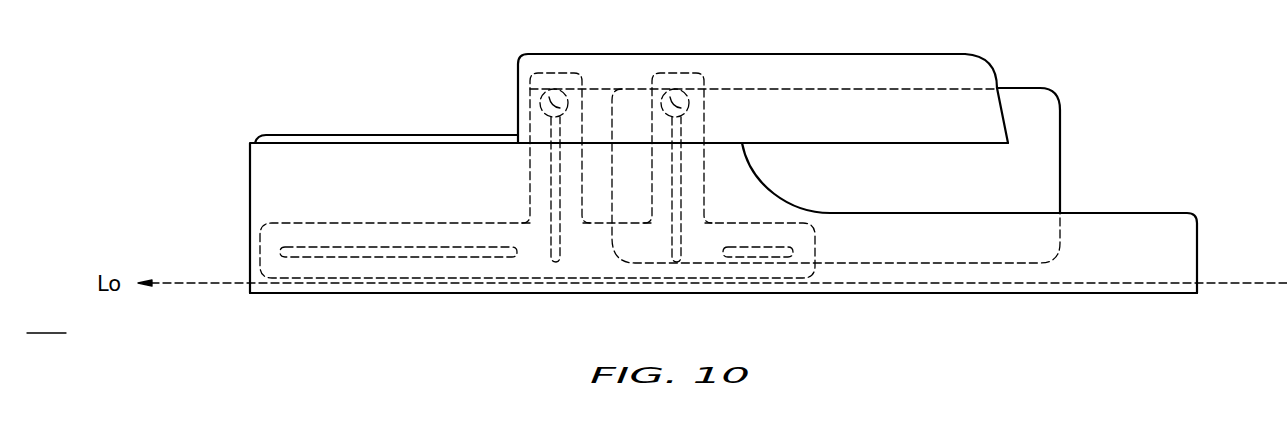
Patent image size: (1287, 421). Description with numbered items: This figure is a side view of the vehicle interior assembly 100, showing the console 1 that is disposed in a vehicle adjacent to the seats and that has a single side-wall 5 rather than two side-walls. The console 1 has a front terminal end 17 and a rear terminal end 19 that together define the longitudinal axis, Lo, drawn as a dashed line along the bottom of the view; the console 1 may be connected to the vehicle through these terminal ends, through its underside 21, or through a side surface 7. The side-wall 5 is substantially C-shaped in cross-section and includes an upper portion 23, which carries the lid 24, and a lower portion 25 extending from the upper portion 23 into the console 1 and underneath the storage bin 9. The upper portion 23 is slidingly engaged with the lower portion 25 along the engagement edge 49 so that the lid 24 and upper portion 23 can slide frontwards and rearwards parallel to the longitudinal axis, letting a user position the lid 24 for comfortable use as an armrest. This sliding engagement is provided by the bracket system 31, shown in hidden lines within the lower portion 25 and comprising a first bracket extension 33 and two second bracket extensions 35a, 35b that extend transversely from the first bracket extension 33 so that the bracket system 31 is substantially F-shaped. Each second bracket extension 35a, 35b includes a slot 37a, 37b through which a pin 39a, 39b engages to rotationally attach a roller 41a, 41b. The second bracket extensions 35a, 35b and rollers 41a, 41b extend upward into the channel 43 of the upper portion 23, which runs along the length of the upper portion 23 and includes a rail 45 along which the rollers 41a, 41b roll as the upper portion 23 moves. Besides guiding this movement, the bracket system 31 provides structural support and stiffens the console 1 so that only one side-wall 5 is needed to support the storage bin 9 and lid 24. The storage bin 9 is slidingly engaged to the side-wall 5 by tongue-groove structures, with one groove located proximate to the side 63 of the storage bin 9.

The vehicle interior assembly 100 is at (47, 322).
The console 1 is at (1197, 248).
The side-wall 5 is at (338, 175).
The side surface 7 is at (993, 272).
The storage bin 9 is at (1020, 130).
The front terminal end 17 is at (1173, 250).
The rear terminal end 19 is at (250, 227).
The underside 21 is at (347, 294).
The upper portion 23 is at (967, 73).
The lid 24 is at (816, 55).
The lower portion 25 is at (1100, 242).
The bracket system 31 is at (805, 237).
The first bracket extension 33 is at (770, 238).
The second bracket extension 35a is at (543, 195).
The second bracket extension 35b is at (705, 190).
The slot 37a is at (560, 240).
The slot 37b is at (693, 245).
The pin 39a is at (548, 100).
The pin 39b is at (677, 100).
The roller 41a is at (555, 106).
The roller 41b is at (693, 110).
The channel 43 is at (907, 118).
The rail 45 is at (863, 87).
The engagement edge 49 is at (258, 138).
The side 63 is at (1028, 180).